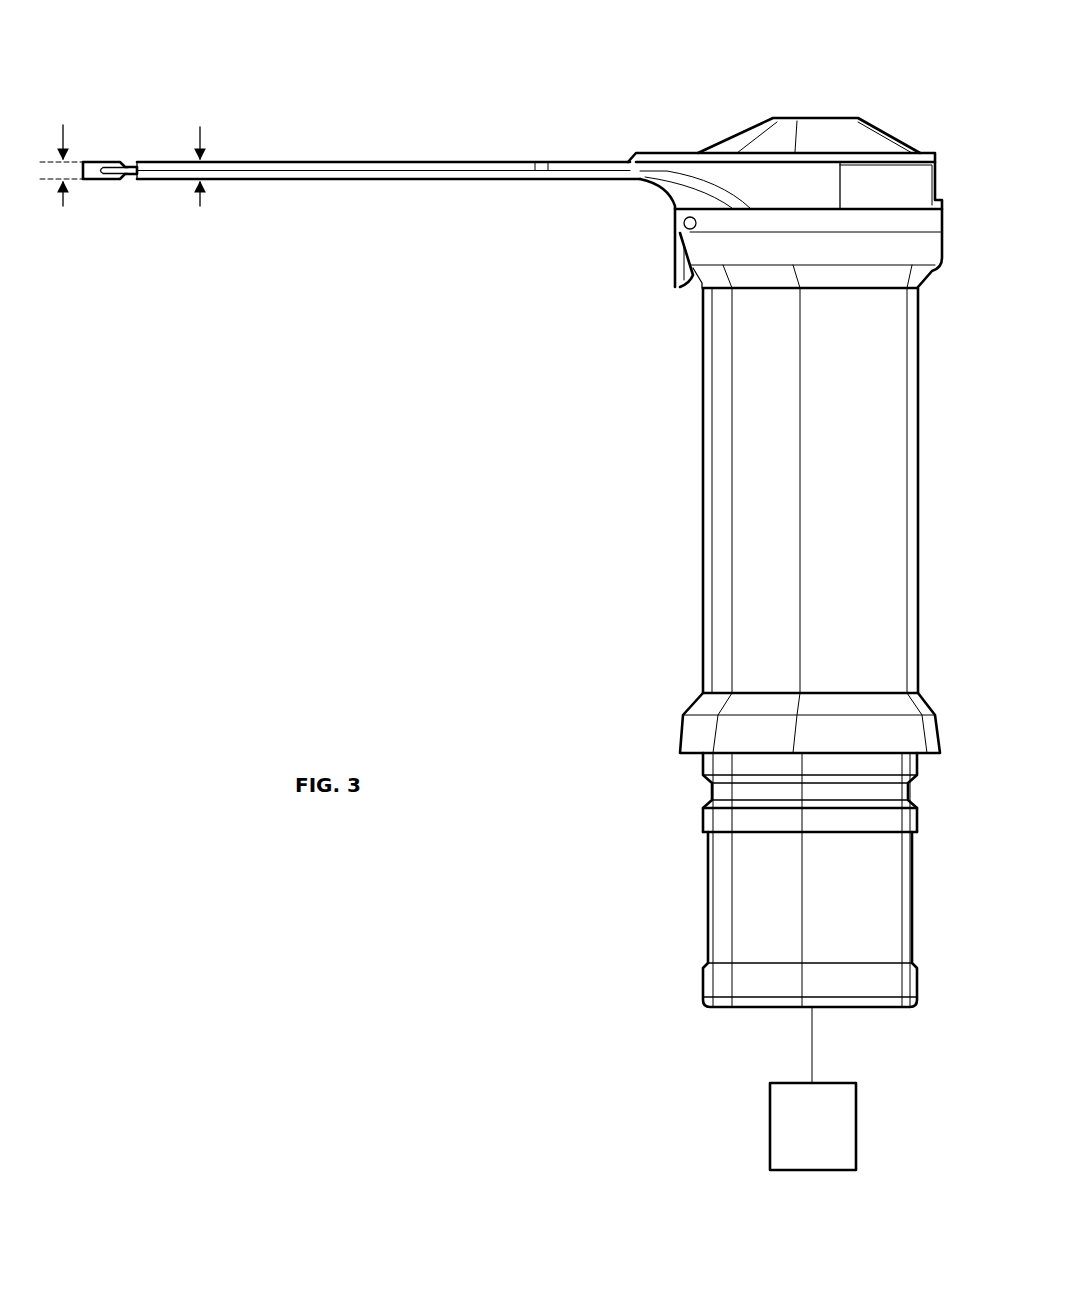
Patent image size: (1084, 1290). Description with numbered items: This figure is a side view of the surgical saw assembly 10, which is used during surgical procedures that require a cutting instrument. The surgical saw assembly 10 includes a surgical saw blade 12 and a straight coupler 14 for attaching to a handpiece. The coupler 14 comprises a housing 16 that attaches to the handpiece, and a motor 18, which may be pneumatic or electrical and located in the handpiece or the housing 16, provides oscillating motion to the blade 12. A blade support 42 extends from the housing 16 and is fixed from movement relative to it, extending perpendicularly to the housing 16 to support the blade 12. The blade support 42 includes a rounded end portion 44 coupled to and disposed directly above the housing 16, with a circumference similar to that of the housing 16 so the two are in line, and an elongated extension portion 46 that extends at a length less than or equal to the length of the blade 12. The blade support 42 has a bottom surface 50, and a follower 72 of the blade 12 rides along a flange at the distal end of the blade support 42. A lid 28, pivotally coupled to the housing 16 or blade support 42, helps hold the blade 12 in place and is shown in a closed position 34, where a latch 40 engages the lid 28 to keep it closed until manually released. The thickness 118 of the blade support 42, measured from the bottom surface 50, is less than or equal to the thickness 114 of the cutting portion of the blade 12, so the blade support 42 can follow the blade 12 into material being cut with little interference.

The surgical saw assembly 10 is at (645, 112).
The surgical saw blade 12 is at (114, 153).
The straight coupler 14 is at (580, 760).
The housing 16 is at (718, 570).
The motor 18 is at (785, 1122).
The lid 28 is at (773, 118).
The closed position 34 is at (866, 108).
The latch 40 is at (676, 277).
The blade support 42 is at (521, 216).
The rounded end portion 44 is at (905, 172).
The extension portion 46 is at (313, 181).
The bottom surface 50 is at (377, 184).
The follower 72 is at (128, 179).
The thickness of the cutting portion 114 is at (70, 137).
The thickness of the blade support 118 is at (200, 208).